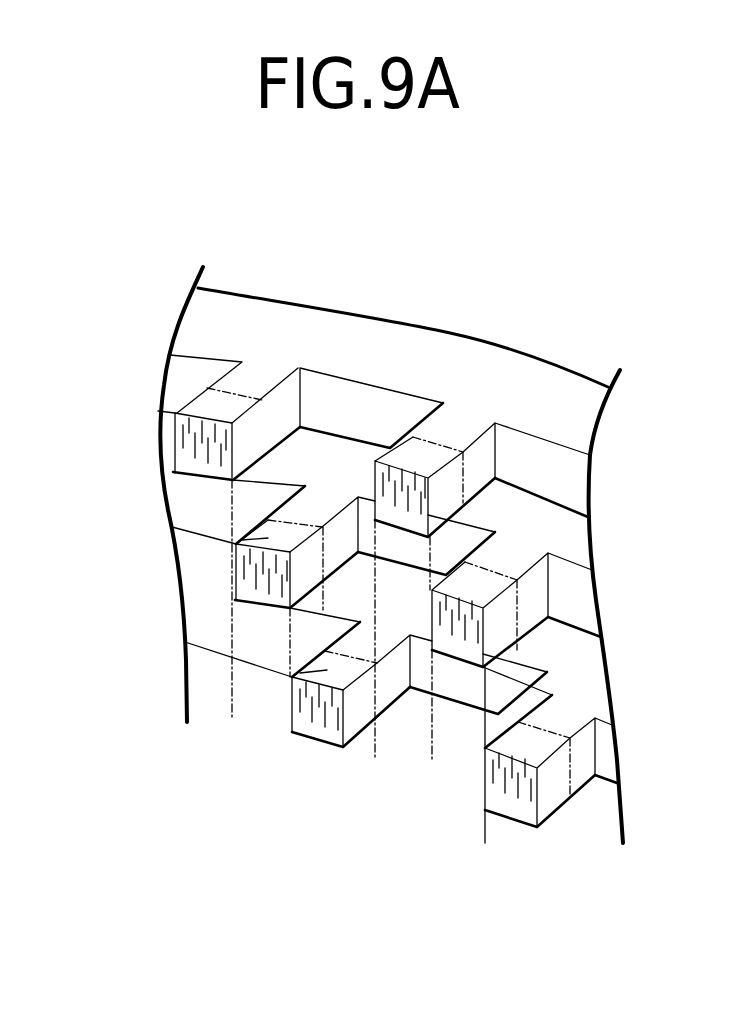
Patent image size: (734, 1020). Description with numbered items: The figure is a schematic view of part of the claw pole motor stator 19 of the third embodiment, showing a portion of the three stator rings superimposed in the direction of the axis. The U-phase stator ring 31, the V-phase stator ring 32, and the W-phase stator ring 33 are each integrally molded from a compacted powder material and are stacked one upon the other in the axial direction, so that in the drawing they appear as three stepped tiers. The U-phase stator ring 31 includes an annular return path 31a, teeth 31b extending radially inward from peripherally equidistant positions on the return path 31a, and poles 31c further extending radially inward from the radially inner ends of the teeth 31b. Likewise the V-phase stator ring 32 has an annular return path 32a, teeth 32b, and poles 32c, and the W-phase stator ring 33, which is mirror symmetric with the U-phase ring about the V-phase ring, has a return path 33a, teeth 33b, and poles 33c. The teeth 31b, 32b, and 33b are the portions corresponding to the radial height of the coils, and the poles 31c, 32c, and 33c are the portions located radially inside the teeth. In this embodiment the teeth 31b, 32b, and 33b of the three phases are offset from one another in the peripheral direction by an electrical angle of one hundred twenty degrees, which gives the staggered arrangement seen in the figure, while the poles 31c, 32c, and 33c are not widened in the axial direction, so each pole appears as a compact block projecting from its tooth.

The stator 19 is at (189, 258).
The U-phase stator ring 31 is at (534, 388).
The return path 31a is at (336, 323).
The teeth 31b is at (257, 373).
The poles 31c is at (215, 403).
The V-phase stator ring 32 is at (555, 535).
The return path 32a is at (347, 457).
The teeth 32b is at (300, 505).
The poles 32c is at (236, 545).
The W-phase stator ring 33 is at (585, 693).
The return path 33a is at (565, 650).
The teeth 33b is at (400, 633).
The poles 33c is at (296, 678).